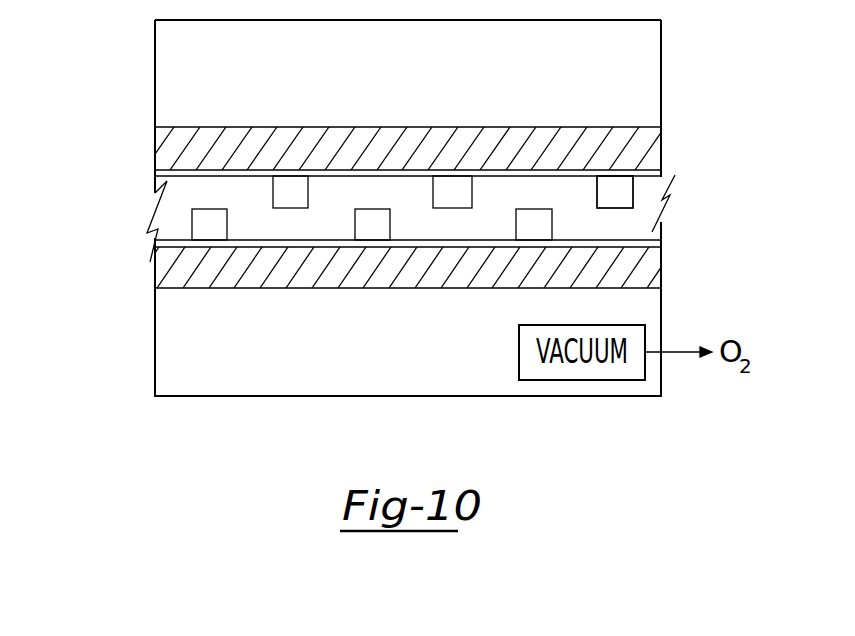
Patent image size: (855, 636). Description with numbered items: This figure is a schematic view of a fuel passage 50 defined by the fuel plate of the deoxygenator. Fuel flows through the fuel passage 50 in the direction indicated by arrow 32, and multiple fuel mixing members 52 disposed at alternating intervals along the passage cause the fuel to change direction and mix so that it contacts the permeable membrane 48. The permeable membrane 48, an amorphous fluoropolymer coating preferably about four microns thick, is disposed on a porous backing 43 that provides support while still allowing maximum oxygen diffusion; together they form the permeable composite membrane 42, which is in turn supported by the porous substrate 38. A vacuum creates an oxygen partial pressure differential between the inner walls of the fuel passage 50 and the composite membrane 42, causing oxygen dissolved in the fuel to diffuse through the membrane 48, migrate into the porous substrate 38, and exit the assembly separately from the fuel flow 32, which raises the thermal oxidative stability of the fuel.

The arrow 32 is at (126, 202).
The porous substrate 38 is at (157, 378).
The permeable composite membrane 42 is at (61, 104).
The porous backing 43 is at (155, 142).
The permeable membrane 48 is at (155, 172).
The fuel passage 50 is at (162, 232).
The fuel mixing member 52 is at (636, 197).